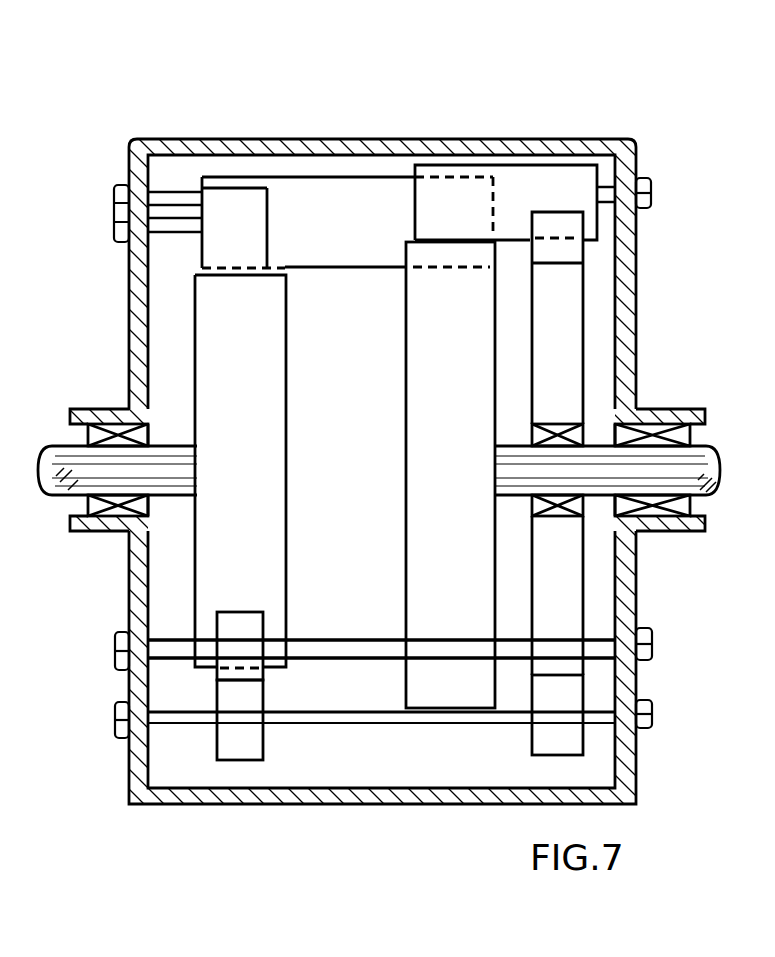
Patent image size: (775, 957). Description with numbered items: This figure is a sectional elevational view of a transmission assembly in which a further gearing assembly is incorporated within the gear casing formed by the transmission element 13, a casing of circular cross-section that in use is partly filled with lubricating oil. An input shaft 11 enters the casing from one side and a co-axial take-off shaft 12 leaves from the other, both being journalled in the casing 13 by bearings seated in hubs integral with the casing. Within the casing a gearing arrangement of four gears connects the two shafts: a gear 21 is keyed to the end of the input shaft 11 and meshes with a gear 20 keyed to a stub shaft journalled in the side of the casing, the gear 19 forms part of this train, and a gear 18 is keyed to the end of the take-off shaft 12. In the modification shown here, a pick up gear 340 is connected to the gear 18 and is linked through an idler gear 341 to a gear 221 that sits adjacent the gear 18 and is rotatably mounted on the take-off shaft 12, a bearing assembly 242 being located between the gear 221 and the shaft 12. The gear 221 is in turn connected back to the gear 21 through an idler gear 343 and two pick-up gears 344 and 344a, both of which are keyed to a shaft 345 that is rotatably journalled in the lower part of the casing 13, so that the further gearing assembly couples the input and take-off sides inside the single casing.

The transmission element 13 is at (176, 140).
The gear 20 is at (233, 198).
The gear 19 is at (342, 190).
The pick up gear 340 is at (517, 178).
The idler gear 341 is at (568, 260).
The gear 221 is at (570, 343).
The bearing assembly 242 is at (575, 425).
The take-off shaft 12 is at (700, 452).
The input shaft 11 is at (60, 458).
The gear 21 is at (260, 412).
The gear 18 is at (425, 517).
The idler gear 343 is at (230, 627).
The pick-up gear 344 is at (252, 735).
The pick-up gear 344a is at (530, 727).
The shaft 345 is at (373, 716).